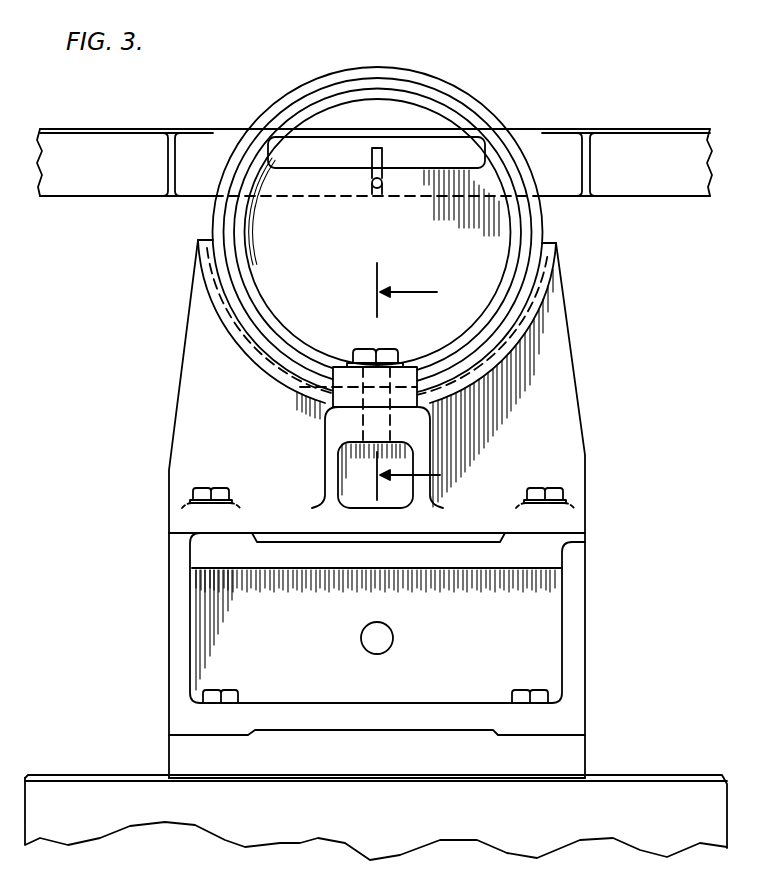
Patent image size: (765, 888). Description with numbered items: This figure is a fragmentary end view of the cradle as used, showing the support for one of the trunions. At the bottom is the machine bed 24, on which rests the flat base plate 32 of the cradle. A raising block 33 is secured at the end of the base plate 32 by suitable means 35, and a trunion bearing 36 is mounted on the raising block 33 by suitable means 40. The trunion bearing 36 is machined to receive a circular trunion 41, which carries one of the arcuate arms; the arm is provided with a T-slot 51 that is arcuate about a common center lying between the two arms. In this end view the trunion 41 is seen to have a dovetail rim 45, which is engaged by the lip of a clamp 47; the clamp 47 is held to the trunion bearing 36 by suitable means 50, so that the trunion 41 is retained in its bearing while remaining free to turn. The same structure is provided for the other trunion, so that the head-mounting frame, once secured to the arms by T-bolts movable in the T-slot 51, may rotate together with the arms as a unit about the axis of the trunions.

The machine bed 24 is at (655, 780).
The base plate 32 is at (567, 757).
The raising block 33 is at (586, 597).
The securing means 35 is at (203, 692).
The trunion bearing 36 is at (552, 270).
The mounting means 40 is at (194, 487).
The trunion 41 is at (490, 217).
The dovetail rim 45 is at (270, 341).
The clamp 47 is at (403, 378).
The holding means 50 is at (390, 350).
The T-slot 51 is at (625, 136).